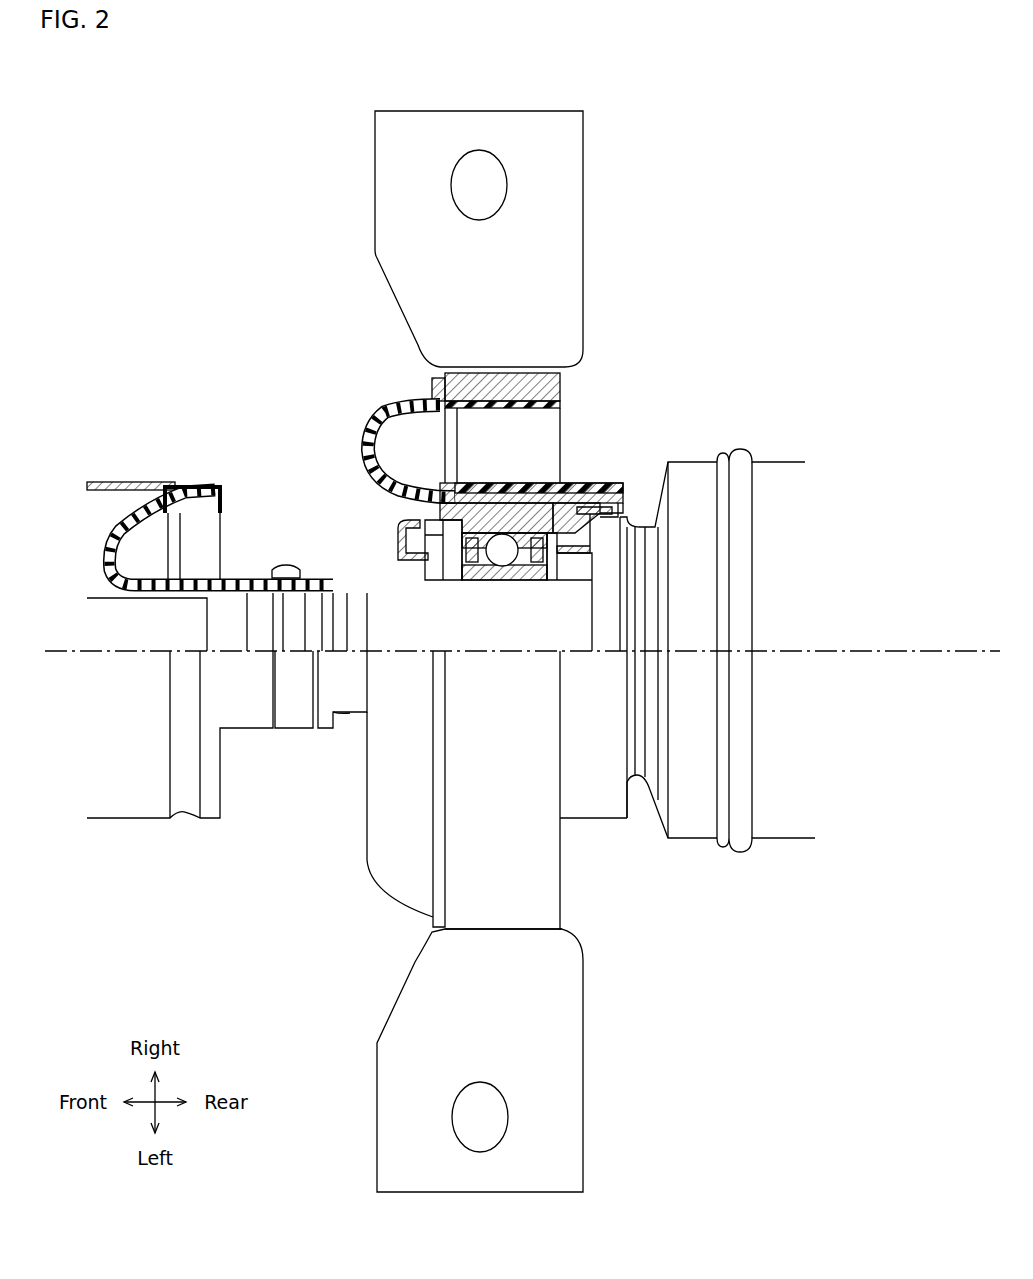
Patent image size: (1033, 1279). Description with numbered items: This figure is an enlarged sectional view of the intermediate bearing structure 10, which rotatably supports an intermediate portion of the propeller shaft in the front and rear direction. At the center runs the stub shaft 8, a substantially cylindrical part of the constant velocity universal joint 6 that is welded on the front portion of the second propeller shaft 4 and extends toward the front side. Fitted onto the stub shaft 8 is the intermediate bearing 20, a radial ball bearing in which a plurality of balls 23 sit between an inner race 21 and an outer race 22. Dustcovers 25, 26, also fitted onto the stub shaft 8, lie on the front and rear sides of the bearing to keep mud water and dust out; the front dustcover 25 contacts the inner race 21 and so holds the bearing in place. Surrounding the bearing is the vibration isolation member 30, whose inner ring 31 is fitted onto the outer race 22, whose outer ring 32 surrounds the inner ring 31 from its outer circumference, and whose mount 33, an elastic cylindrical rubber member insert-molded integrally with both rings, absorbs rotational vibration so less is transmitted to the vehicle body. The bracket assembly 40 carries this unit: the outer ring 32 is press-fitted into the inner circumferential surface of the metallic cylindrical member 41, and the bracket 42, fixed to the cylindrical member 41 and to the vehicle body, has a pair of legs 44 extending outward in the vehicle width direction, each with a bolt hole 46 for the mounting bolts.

The second propeller shaft 4 is at (772, 468).
The constant velocity universal joint 6 is at (130, 792).
The stub shaft 8 is at (158, 617).
The intermediate bearing structure 10 is at (275, 230).
The intermediate bearing 20 is at (487, 590).
The inner race 21 is at (512, 577).
The outer race 22 is at (525, 534).
The balls 23 is at (530, 580).
The dustcover 25 is at (400, 535).
The dustcover 26 is at (583, 523).
The vibration isolation member 30 is at (460, 426).
The inner ring 31 is at (523, 493).
The outer ring 32 is at (430, 393).
The mount 33 is at (373, 442).
The bracket assembly 40 is at (517, 651).
The cylindrical member 41 is at (548, 377).
The bracket 42 is at (510, 651).
The legs 44 is at (510, 651).
The bolt holes 46 is at (467, 183).